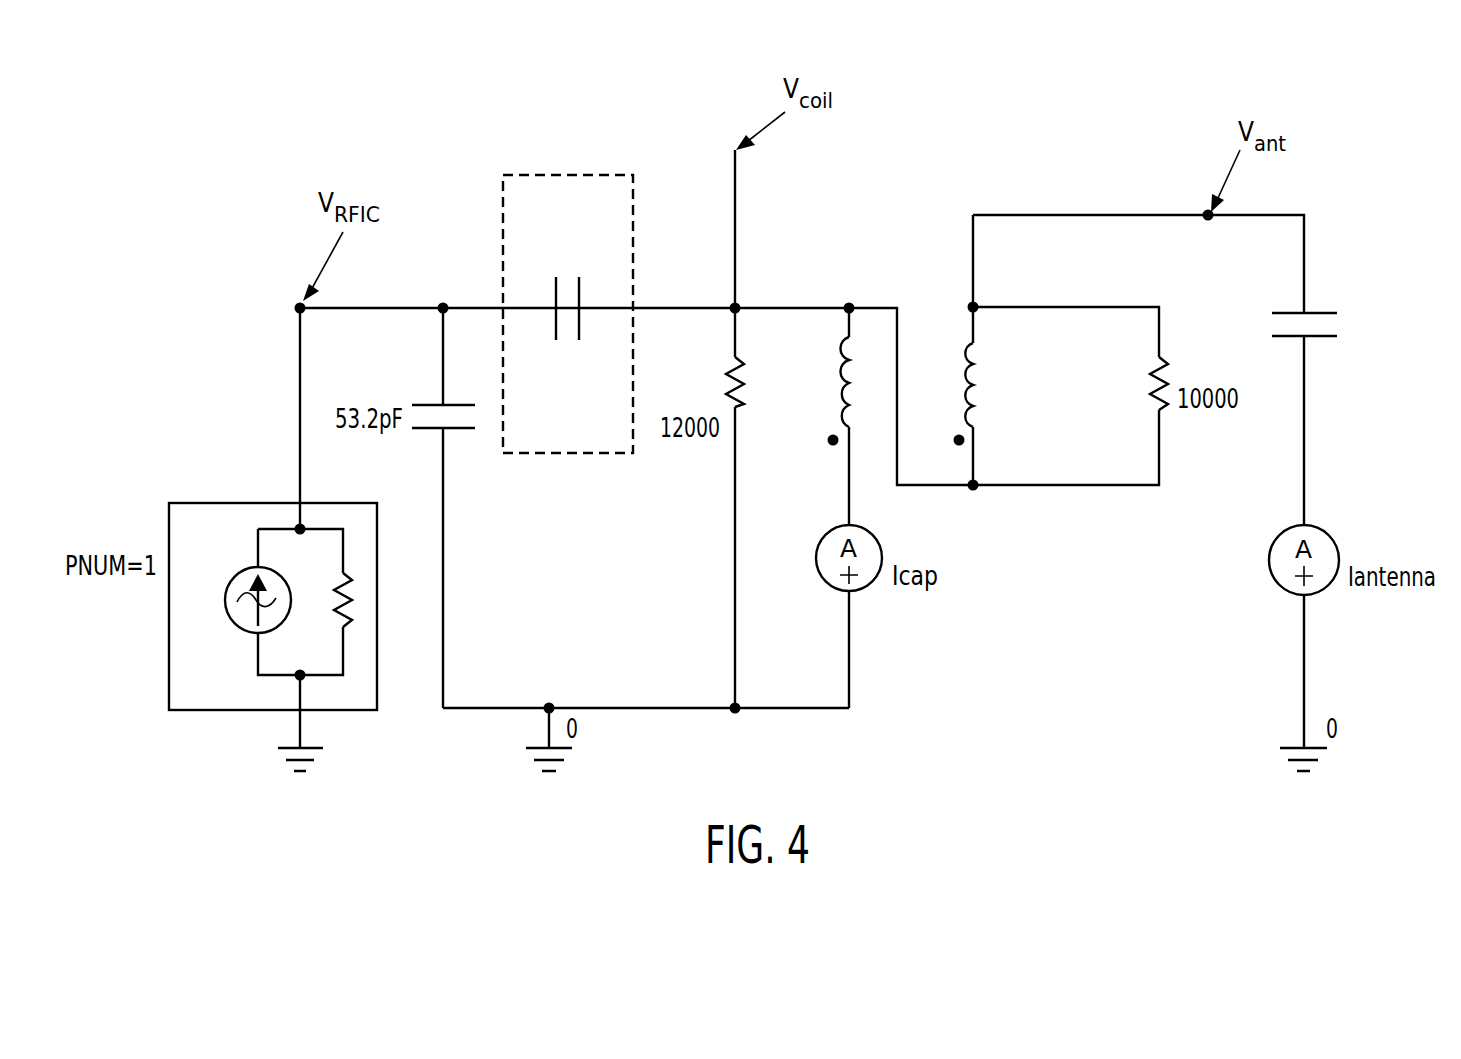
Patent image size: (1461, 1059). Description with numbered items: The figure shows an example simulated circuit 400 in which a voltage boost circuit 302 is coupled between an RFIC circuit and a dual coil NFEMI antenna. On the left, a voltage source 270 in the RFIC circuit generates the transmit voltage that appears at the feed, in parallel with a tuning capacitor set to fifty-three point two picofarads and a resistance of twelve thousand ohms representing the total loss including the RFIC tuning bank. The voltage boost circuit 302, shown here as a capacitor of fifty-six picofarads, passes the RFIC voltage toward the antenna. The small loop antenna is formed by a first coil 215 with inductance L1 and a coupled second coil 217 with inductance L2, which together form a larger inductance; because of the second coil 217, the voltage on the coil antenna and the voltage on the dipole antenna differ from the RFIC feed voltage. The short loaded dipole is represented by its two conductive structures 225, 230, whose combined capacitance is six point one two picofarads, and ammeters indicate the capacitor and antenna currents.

The simulated circuit 400 is at (255, 142).
The voltage boost circuit 302 is at (578, 175).
The first coil 215 is at (838, 394).
The second coil 217 is at (972, 361).
The conductive structure 230 is at (1322, 312).
The conductive structure 225 is at (1322, 338).
The voltage source 270 is at (238, 626).